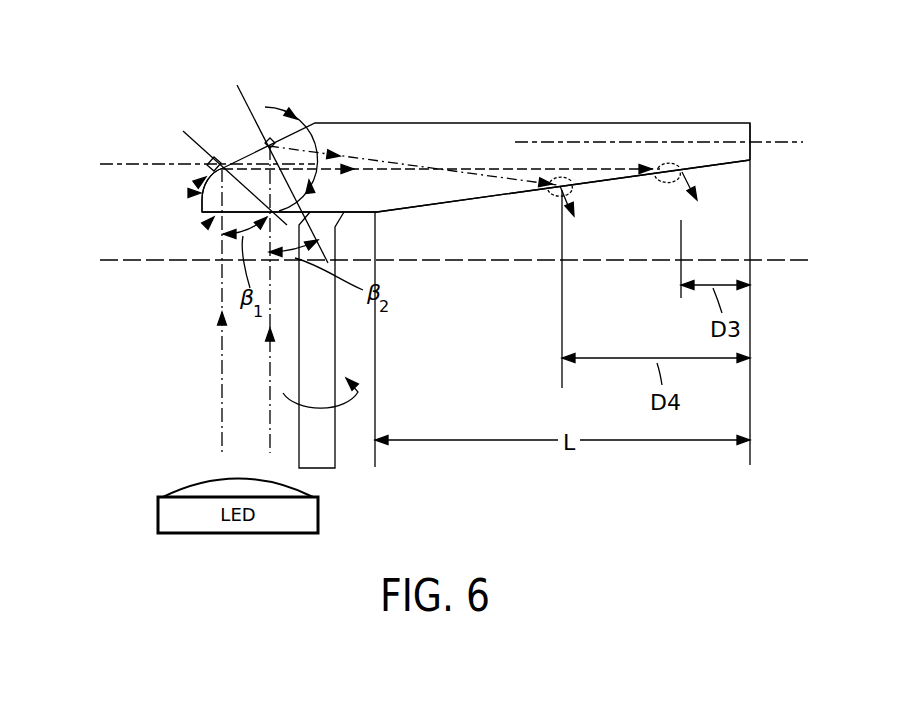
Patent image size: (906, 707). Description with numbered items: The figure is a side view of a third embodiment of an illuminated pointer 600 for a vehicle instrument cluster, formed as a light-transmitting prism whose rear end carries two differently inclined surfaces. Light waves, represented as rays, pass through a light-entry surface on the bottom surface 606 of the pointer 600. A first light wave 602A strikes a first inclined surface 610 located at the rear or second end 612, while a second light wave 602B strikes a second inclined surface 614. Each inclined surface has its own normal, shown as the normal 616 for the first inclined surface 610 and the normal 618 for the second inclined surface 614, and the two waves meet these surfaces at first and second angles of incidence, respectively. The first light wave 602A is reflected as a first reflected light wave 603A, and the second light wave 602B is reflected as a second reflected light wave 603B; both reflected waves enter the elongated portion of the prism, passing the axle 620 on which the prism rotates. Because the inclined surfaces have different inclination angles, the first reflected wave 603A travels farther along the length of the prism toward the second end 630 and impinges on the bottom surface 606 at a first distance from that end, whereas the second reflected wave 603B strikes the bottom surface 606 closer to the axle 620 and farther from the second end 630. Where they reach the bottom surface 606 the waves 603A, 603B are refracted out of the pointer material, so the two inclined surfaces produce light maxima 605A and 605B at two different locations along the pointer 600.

The illuminated pointer 600 is at (118, 45).
The first light wave 602A is at (221, 352).
The second light wave 602B is at (269, 428).
The first reflected light wave 603A is at (572, 167).
The second reflected light wave 603B is at (368, 158).
The first light maximum 605A is at (557, 188).
The second light maximum 605B is at (680, 178).
The bottom surface 606 is at (212, 214).
The first inclined surface 610 is at (202, 208).
The second end 612 is at (190, 193).
The second inclined surface 614 is at (265, 142).
The normal of first inclined surface 616 is at (183, 131).
The normal of second inclined surface 618 is at (250, 105).
The axle 620 is at (336, 347).
The second end 630 is at (752, 121).